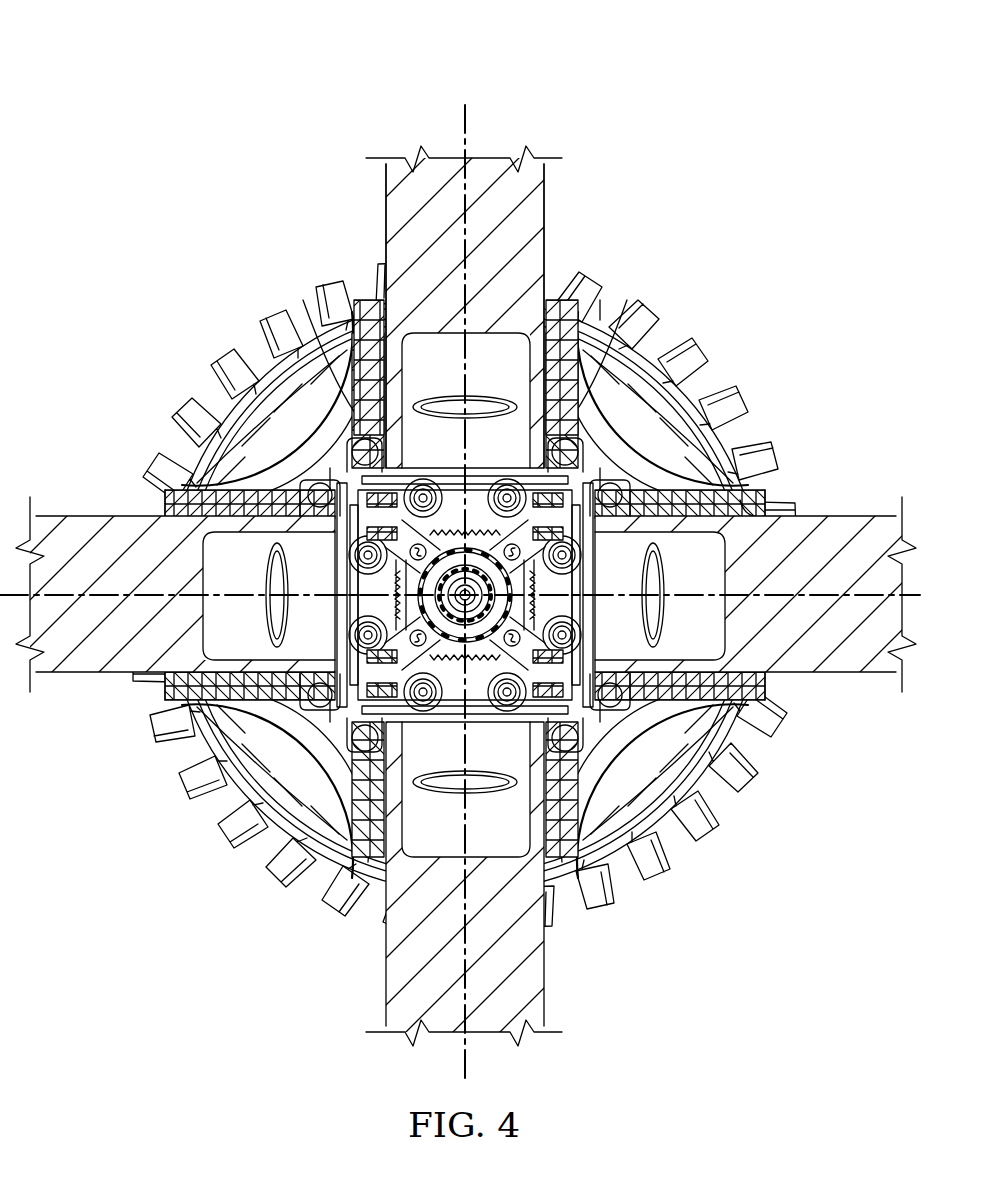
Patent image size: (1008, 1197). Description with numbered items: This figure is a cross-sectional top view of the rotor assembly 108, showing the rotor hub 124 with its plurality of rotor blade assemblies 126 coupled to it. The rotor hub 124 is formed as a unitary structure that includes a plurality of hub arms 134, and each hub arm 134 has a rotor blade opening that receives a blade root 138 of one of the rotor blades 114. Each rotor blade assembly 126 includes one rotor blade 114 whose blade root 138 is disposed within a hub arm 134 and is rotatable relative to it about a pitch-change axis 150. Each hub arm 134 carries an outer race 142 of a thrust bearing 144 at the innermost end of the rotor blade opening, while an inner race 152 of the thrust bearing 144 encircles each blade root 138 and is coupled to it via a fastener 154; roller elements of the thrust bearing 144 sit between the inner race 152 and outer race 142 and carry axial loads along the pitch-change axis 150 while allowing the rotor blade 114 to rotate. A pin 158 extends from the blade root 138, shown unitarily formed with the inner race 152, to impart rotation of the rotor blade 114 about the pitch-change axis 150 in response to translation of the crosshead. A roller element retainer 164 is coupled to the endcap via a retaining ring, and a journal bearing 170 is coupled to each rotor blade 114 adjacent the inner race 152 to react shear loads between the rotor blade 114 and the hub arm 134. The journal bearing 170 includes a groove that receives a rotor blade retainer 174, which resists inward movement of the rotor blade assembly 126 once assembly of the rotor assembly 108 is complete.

The rotor assembly 108 is at (194, 70).
The rotor blade 114 is at (546, 208).
The rotor hub 124 is at (255, 458).
The rotor blade assembly 126 is at (372, 210).
The hub arm 134 is at (330, 345).
The blade root 138 is at (602, 345).
The outer race 142 is at (655, 400).
The thrust bearing 144 is at (325, 716).
The pitch-change axis 150 is at (467, 128).
The inner race 152 is at (295, 385).
The fastener 154 is at (440, 396).
The pin 158 is at (470, 476).
The roller element retainer 164 is at (703, 398).
The journal bearing 170 is at (343, 306).
The rotor blade retainer 174 is at (586, 292).